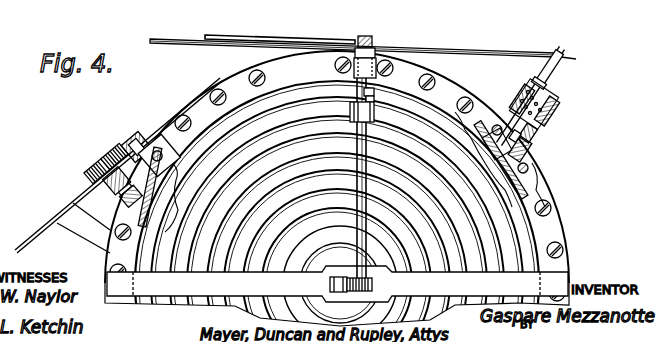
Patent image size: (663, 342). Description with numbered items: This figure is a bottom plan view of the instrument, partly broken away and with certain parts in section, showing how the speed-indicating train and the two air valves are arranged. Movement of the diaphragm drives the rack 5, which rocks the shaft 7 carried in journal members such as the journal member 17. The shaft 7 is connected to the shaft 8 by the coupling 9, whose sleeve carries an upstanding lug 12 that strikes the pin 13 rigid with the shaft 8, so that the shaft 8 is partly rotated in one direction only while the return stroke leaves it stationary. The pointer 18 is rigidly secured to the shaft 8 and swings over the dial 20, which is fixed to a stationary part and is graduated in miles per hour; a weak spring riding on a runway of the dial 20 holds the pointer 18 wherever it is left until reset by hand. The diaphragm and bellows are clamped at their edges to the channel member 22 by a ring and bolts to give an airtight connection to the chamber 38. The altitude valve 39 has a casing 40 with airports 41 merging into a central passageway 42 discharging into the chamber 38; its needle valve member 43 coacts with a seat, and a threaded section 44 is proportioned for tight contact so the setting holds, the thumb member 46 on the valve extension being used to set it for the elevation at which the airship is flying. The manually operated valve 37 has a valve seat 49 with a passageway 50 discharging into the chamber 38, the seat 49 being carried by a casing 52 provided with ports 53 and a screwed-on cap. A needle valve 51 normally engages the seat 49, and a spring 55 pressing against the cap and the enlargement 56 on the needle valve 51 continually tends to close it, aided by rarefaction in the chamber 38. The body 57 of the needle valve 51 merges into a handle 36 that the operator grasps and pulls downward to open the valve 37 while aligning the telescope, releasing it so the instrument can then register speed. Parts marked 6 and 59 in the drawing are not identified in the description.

The rack 5 is at (336, 277).
The pivot bolt 6 is at (366, 280).
The shaft 7 is at (368, 162).
The shaft 8 is at (354, 88).
The coupling 9 is at (350, 110).
The upstanding lug 12 is at (375, 91).
The pin 13 is at (375, 99).
The journal member 17 is at (443, 297).
The pointer 18 is at (278, 38).
The dial 20 is at (172, 38).
The channel member 22 is at (465, 130).
The handle 36 is at (559, 53).
The valve 37 is at (556, 111).
The chamber 38 is at (183, 175).
The valve 39 is at (118, 185).
The casing 40 is at (110, 190).
The airports 41 is at (117, 190).
The central passageway 42 is at (143, 200).
The needle valve member 43 is at (133, 155).
The threaded section 44 is at (120, 152).
The thumb member 46 is at (103, 163).
The valve seat 49 is at (533, 162).
The passageway 50 is at (484, 165).
The needle valve 51 is at (495, 143).
The casing 52 is at (540, 134).
The ports 53 is at (532, 146).
The spring 55 is at (534, 86).
The enlargement 56 is at (512, 112).
The body 57 is at (546, 93).
The washer 59 is at (556, 103).